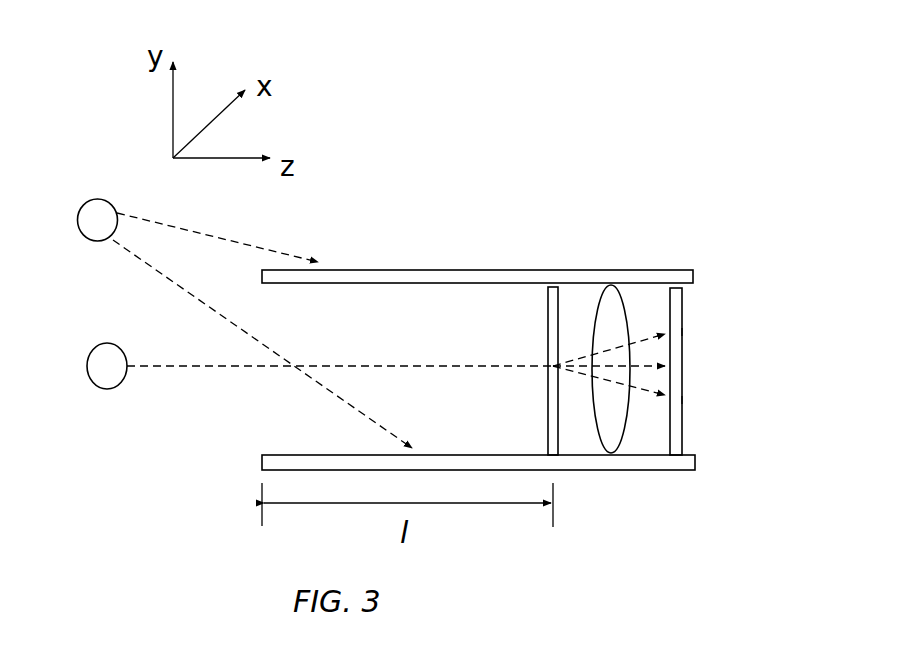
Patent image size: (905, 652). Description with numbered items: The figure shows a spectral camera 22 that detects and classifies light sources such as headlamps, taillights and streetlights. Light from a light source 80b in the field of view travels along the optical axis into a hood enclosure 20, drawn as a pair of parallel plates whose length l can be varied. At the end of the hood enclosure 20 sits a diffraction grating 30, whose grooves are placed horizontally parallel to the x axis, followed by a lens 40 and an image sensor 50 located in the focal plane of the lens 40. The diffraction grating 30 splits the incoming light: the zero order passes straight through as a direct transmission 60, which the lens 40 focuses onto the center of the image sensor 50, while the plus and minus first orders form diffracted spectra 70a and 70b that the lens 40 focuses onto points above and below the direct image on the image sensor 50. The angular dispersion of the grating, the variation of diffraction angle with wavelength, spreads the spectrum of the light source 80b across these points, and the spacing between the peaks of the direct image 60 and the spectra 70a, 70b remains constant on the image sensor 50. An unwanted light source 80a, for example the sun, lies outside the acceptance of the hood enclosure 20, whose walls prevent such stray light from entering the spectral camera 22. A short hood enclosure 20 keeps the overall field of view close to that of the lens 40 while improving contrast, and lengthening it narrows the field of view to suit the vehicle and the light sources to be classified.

The hood enclosure 20 is at (418, 262).
The spectral camera 22 is at (502, 171).
The diffraction grating 30 is at (550, 423).
The lens 40 is at (615, 313).
The image sensor 50 is at (677, 287).
The direct transmission 60 is at (682, 368).
The diffracted spectrum 70a is at (683, 330).
The diffracted spectrum 70b is at (682, 400).
The unwanted light source 80a is at (88, 193).
The light source 80b is at (95, 388).